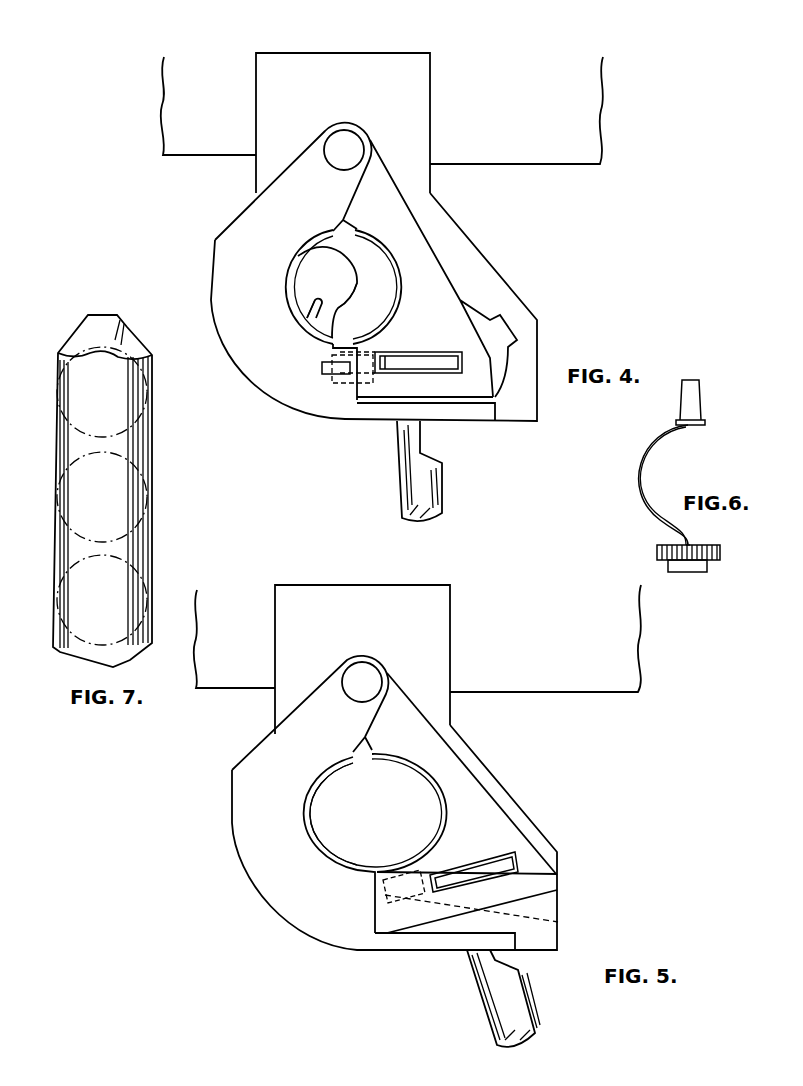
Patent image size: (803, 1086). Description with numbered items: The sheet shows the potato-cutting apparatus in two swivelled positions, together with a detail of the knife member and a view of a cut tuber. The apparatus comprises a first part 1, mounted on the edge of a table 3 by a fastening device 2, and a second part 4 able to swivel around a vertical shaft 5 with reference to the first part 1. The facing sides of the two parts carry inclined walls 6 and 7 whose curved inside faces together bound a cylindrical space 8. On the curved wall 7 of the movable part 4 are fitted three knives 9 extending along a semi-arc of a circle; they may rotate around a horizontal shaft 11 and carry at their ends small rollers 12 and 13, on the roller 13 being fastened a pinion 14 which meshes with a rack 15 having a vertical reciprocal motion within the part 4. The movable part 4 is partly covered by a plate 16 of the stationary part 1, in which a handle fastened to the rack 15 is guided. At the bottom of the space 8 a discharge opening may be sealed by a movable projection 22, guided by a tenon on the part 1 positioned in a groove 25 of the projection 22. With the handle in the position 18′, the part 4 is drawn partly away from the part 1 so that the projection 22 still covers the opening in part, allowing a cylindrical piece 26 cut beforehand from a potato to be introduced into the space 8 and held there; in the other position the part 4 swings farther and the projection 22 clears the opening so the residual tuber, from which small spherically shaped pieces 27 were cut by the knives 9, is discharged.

In FIG. 4, the first part 1 is at (278, 375).
In FIG. 5, the first part 1 is at (250, 833).
In FIG. 4, the fastening device 2 is at (447, 52).
In FIG. 5, the fastening device 2 is at (460, 603).
In FIG. 4, the table 3 is at (588, 153).
In FIG. 5, the table 3 is at (598, 662).
In FIG. 4, the second part 4 is at (440, 290).
In FIG. 5, the second part 4 is at (477, 810).
In FIG. 4, the vertical shaft 5 is at (348, 150).
In FIG. 5, the vertical shaft 5 is at (367, 682).
In FIG. 4, the inclined wall 6 is at (300, 278).
In FIG. 5, the inclined wall 6 is at (313, 823).
In FIG. 4, the inclined wall 7 is at (388, 280).
In FIG. 5, the inclined wall 7 is at (447, 808).
In FIG. 4, the cylindrical space 8 is at (372, 267).
In FIG. 5, the cylindrical space 8 is at (355, 843).
In FIG. 6, the knives 9 is at (638, 490).
In FIG. 6, the horizontal shaft 11 is at (690, 472).
In FIG. 6, the small roller 12 is at (688, 393).
In FIG. 4, the small roller 13 is at (344, 385).
In FIG. 5, the small roller 13 is at (540, 920).
In FIG. 6, the small roller 13 is at (692, 567).
In FIG. 4, the pinion 14 is at (340, 367).
In FIG. 5, the pinion 14 is at (386, 937).
In FIG. 6, the pinion 14 is at (713, 562).
In FIG. 4, the rack 15 is at (410, 367).
In FIG. 5, the rack 15 is at (497, 868).
In FIG. 4, the plate 16 is at (470, 413).
In FIG. 5, the plate 16 is at (433, 940).
In FIG. 4, the handle position 18′ is at (428, 498).
In FIG. 4, the movable projection 22 is at (322, 265).
In FIG. 4, the groove 25 is at (310, 310).
In FIG. 7, the piece 26 is at (157, 518).
In FIG. 7, the small spherically shaped pieces 27 is at (60, 573).